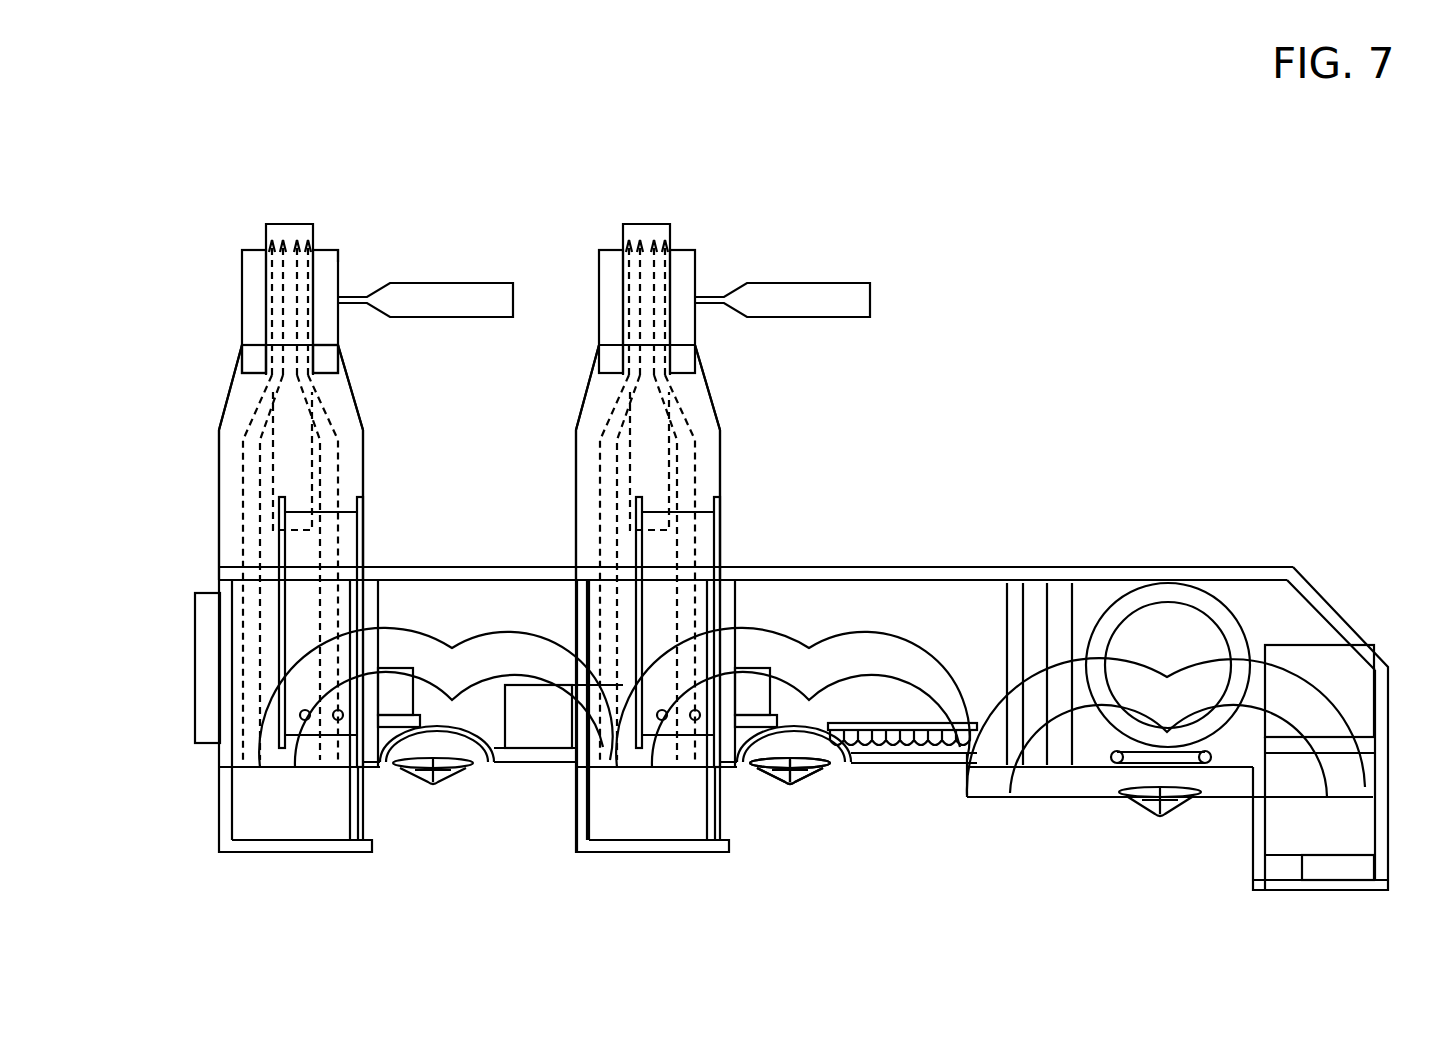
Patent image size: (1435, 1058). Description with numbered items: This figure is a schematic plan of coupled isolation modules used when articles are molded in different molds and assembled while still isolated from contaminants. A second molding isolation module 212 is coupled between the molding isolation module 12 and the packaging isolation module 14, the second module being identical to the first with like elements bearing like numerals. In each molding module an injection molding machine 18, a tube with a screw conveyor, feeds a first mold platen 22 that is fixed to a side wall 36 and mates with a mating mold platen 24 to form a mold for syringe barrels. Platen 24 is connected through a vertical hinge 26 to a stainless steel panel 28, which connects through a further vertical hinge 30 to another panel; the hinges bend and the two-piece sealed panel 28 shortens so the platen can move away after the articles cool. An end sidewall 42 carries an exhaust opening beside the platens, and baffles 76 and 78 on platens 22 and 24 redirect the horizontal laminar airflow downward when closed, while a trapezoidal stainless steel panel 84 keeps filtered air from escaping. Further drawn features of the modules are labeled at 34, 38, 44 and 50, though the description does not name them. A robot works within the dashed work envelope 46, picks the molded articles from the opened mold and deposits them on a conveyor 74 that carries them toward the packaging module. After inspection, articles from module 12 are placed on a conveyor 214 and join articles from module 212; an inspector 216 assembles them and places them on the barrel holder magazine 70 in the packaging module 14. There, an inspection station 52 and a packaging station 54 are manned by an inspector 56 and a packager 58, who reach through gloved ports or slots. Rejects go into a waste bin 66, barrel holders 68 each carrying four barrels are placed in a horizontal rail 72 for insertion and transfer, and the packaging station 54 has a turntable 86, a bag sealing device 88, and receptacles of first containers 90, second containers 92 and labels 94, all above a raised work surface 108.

The molding isolation module 12 is at (392, 475).
The packaging isolation module 14 is at (1027, 440).
The injection molding machine 18 is at (432, 283).
The first mold platen 22 is at (338, 257).
The mating mold platen 24 is at (242, 284).
The vertical hinge 26 is at (266, 345).
The stainless steel panel 28 is at (229, 390).
The vertical hinge 30 is at (219, 432).
The right clamp parting line 34 is at (338, 347).
The side wall 36 is at (349, 380).
The right container wall 38 is at (363, 432).
The end sidewall 42 is at (328, 249).
The nozzle tube 44 is at (286, 223).
The work envelope 46 is at (317, 407).
The lower reservoir 50 is at (258, 806).
The inspection station 52 is at (472, 598).
The packaging station 54 is at (1283, 611).
The inspector 56 is at (431, 782).
The packager 58 is at (1158, 805).
The waste bin 66 is at (405, 668).
The barrel holders 68 is at (958, 745).
The barrel holder magazine 70 is at (421, 723).
The horizontal rail 72 is at (506, 686).
The conveyor 74 is at (363, 523).
The baffle 76 is at (250, 368).
The baffle 78 is at (330, 358).
The trapezoidal stainless steel panel 84 is at (483, 768).
The turntable 86 is at (1212, 597).
The bag sealing device 88 is at (1181, 746).
The first containers 90 is at (1323, 680).
The second containers 92 is at (1333, 827).
The labels 94 is at (1284, 873).
The packaging station work surface 108 is at (1364, 706).
The second molding isolation module 212 is at (749, 475).
The conveyor 214 is at (563, 757).
The inspector 216 is at (788, 782).